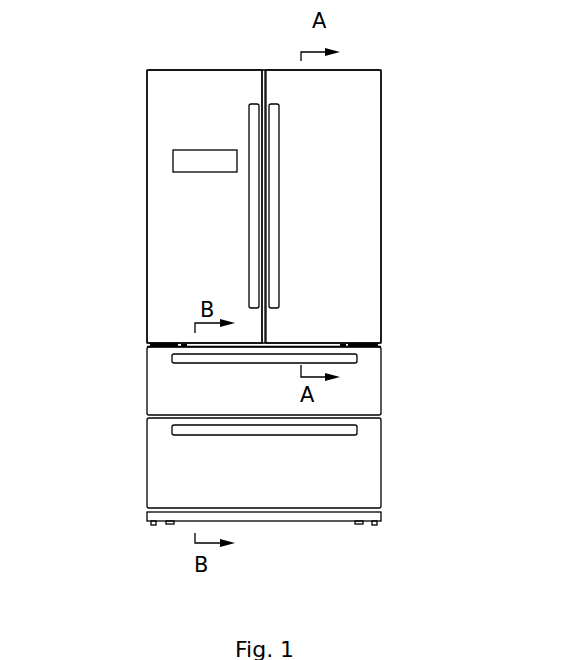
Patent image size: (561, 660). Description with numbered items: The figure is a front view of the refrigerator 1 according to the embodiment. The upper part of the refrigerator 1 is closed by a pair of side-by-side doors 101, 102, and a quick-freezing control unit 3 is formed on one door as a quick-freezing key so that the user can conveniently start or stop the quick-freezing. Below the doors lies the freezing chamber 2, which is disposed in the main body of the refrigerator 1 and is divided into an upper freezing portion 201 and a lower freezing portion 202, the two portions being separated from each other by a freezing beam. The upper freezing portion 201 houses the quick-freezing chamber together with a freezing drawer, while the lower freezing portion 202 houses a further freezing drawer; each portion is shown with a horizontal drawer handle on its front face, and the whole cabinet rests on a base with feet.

The refrigerator 1 is at (277, 208).
The right refrigerating door 101 is at (338, 196).
The left refrigerating door 102 is at (175, 206).
The quick-freezing control unit 3 is at (174, 170).
The freezing chamber 2 is at (225, 464).
The upper freezing portion 201 is at (175, 408).
The lower freezing portion 202 is at (172, 487).